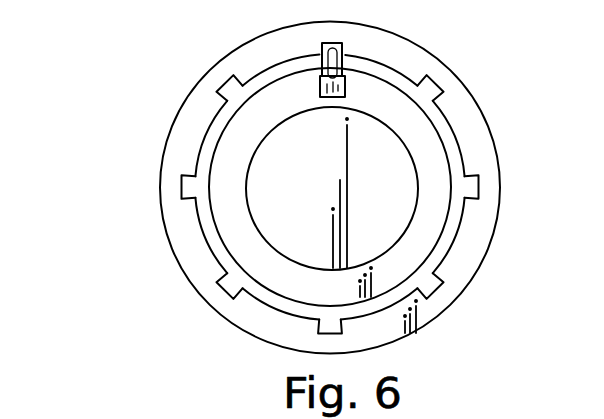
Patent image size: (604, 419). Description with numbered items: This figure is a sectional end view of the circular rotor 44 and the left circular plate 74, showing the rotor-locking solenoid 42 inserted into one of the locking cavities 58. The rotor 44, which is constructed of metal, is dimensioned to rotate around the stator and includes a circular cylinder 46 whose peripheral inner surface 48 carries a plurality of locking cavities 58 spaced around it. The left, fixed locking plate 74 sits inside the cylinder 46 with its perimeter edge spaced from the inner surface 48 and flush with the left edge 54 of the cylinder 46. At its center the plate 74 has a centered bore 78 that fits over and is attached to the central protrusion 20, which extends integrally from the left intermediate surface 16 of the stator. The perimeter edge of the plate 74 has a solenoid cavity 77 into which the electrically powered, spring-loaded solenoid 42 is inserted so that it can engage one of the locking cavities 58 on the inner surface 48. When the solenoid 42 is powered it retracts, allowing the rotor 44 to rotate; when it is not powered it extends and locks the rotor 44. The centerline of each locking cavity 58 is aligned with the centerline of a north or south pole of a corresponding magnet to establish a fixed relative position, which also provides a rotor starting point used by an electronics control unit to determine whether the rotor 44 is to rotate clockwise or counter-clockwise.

The left intermediate surface 16 is at (430, 124).
The central protrusion 20 is at (292, 155).
The rotor-locking solenoid 42 is at (343, 77).
The circular rotor 44 is at (251, 188).
The circular cylinder 46 is at (251, 188).
The left edge 54 is at (188, 238).
The inner surface 48 is at (460, 226).
The locking cavities 58 is at (343, 47).
The left circular plate 74 is at (297, 287).
The solenoid cavity 77 is at (320, 82).
The centered bore 78 is at (245, 177).